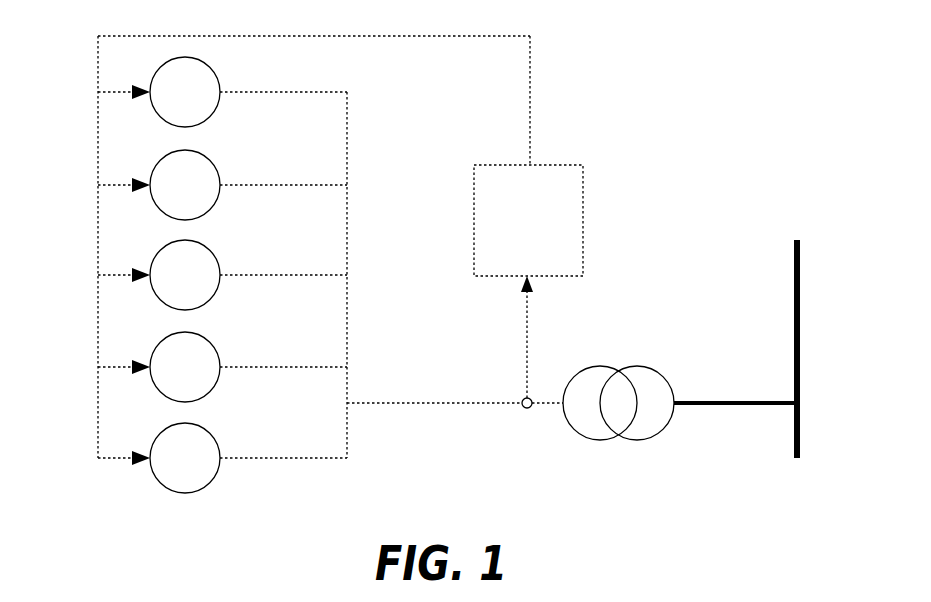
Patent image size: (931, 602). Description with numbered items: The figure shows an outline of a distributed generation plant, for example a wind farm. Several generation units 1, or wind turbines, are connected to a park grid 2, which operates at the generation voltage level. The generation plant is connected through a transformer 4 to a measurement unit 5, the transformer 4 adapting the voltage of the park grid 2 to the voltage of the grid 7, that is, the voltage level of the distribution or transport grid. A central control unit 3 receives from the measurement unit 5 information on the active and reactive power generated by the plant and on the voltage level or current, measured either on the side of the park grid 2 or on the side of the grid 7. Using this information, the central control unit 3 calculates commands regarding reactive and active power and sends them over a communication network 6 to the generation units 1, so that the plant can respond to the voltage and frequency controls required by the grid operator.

The generation units 1 is at (167, 198).
The park grid 2 is at (349, 405).
The central control unit 3 is at (584, 184).
The transformer 4 is at (618, 434).
The measurement unit 5 is at (531, 409).
The communication network 6 is at (532, 73).
The grid 7 is at (750, 405).